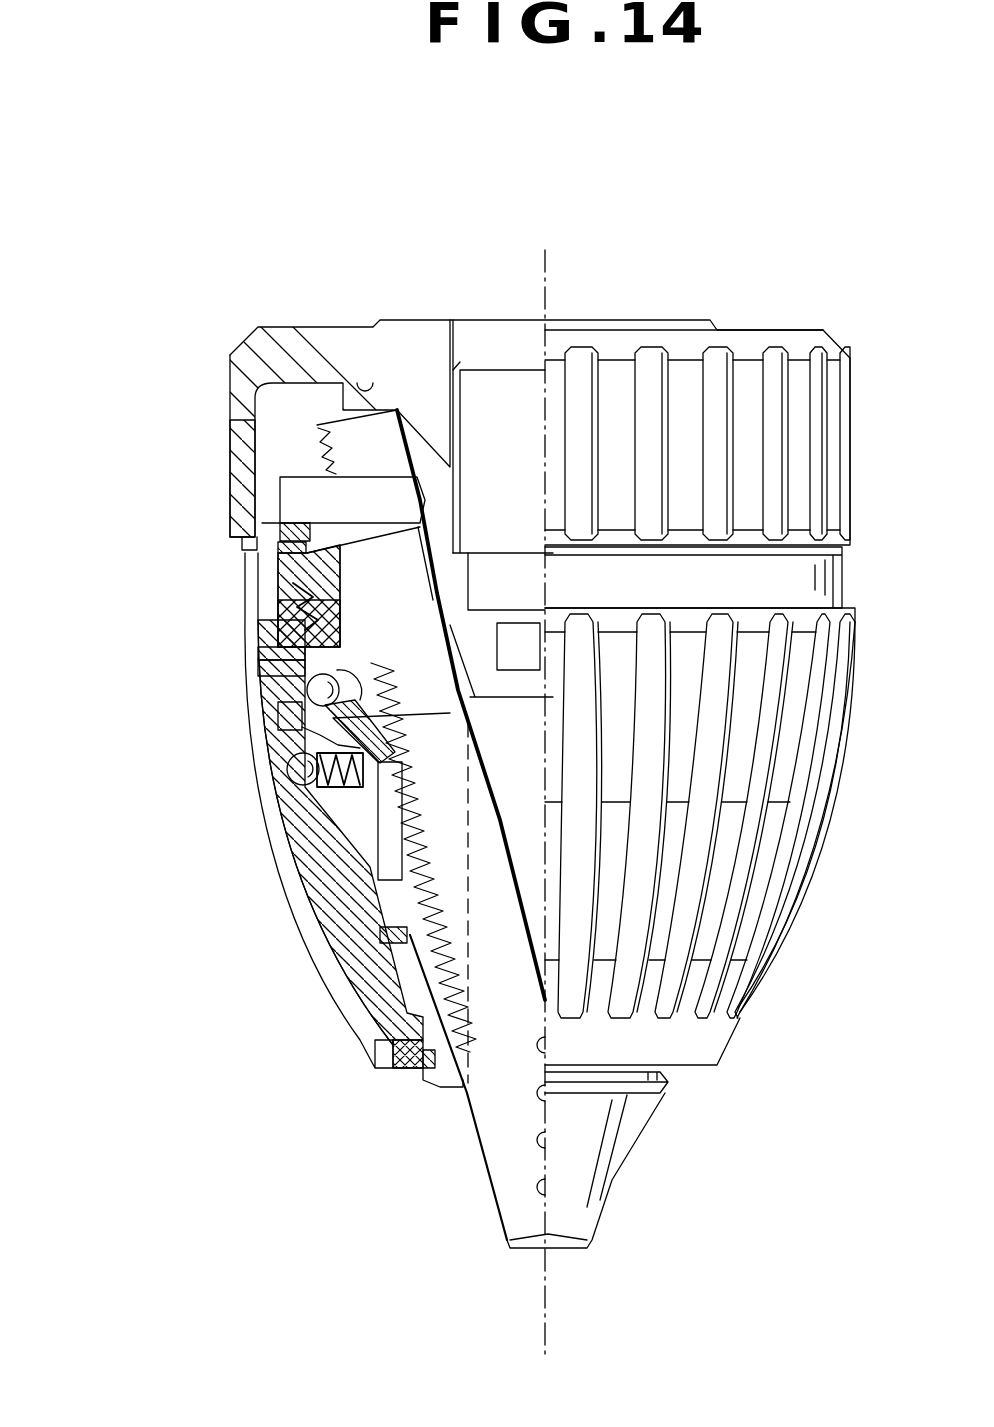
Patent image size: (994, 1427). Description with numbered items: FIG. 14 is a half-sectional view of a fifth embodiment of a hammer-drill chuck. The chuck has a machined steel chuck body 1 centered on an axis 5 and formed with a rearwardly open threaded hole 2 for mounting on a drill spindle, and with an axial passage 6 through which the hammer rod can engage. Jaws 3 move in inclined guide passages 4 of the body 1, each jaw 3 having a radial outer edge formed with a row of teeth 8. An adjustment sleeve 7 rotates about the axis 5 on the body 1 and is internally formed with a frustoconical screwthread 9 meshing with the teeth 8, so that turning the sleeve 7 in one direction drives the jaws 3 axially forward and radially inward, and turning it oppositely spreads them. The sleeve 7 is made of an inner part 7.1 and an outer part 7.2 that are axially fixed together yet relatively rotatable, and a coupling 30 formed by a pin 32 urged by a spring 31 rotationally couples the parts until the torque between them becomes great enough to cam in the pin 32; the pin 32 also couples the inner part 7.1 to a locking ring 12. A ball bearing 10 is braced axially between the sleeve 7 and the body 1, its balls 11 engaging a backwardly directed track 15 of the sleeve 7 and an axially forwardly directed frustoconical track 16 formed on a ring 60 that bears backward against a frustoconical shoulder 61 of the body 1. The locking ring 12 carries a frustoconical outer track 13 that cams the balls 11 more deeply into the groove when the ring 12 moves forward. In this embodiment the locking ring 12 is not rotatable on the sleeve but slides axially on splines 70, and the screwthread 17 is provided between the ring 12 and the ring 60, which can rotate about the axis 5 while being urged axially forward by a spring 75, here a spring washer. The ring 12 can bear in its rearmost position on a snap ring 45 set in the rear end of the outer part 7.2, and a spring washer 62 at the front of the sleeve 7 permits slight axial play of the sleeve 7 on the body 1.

The chuck body 1 is at (411, 342).
The threaded hole 2 is at (497, 400).
The jaws 3 is at (490, 1110).
The guide passages 4 is at (421, 616).
The axis 5 is at (548, 292).
The axial passage 6 is at (509, 657).
The adjustment sleeve 7 is at (857, 659).
The inner sleeve part 7.1 is at (303, 890).
The outer sleeve part 7.2 is at (320, 920).
The teeth 8 is at (474, 946).
The frustoconical screwthread 9 is at (405, 695).
The ball bearing 10 is at (300, 675).
The balls 11 is at (380, 715).
The locking ring 12 is at (270, 585).
The outer track 13 is at (285, 708).
The track 15 is at (290, 758).
The annular track 16 is at (362, 640).
The screwthread 17 is at (262, 630).
The coupling 30 is at (283, 790).
The spring 31 is at (322, 833).
The pin 32 is at (290, 797).
The snap ring 45 is at (240, 507).
The ring 60 is at (270, 674).
The shoulder 61 is at (255, 657).
The spring washer 62 is at (372, 1038).
The splines 70 is at (268, 610).
The spring 75 is at (270, 556).